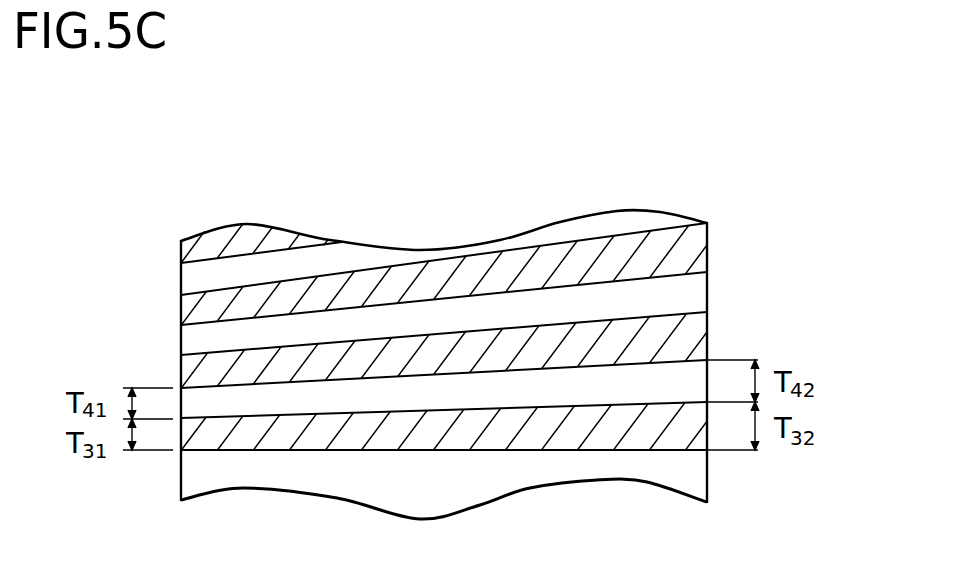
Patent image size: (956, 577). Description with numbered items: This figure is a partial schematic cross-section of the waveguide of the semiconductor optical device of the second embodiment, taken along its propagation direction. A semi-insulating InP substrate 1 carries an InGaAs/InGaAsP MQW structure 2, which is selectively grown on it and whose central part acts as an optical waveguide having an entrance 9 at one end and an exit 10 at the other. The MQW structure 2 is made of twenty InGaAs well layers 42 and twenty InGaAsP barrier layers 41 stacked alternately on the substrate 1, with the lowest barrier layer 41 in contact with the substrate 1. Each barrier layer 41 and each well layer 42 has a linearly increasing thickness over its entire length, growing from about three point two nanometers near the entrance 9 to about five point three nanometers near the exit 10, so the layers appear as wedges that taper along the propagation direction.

The semi-insulating InP substrate 1 is at (707, 484).
The InGaAs/InGaAsP MQW structure 2 is at (848, 443).
The entrance 9 is at (181, 277).
The exit 10 is at (707, 327).
The InGaAsP barrier layer 41 is at (788, 258).
The InGaAs well layer 42 is at (788, 213).